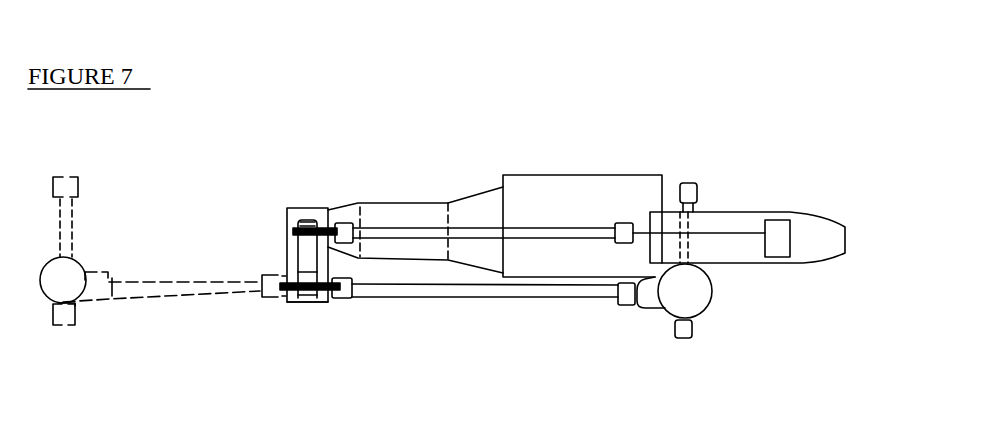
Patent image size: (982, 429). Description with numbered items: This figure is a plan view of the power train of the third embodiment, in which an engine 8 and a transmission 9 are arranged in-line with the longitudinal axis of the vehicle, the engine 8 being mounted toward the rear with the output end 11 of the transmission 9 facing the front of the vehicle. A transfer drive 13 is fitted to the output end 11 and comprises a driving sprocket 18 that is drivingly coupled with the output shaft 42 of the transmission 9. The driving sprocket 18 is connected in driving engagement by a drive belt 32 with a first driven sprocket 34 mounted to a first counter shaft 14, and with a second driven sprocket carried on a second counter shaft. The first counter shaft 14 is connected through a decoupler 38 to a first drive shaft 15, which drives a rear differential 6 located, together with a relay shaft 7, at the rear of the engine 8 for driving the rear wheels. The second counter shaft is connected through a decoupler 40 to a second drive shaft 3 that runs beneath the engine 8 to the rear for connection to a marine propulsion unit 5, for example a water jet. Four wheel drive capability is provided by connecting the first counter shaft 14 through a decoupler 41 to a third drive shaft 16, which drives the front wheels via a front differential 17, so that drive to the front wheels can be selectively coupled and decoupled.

The second drive shaft 3 is at (520, 275).
The marine propulsion unit 5 is at (748, 220).
The rear differential 6 is at (683, 293).
The relay shaft 7 is at (695, 212).
The engine 8 is at (592, 212).
The transmission 9 is at (418, 215).
The output end 11 is at (340, 217).
The transfer drive 13 is at (317, 221).
The first counter shaft 14 is at (320, 303).
The first drive shaft 15 is at (539, 298).
The third drive shaft 16 is at (157, 287).
The front differential 17 is at (62, 280).
The driving sprocket 18 is at (302, 222).
The drive belt 32 is at (300, 252).
The first driven sprocket 34 is at (305, 303).
The decoupler 38 is at (340, 299).
The decoupler 40 is at (345, 222).
The decoupler 41 is at (268, 298).
The output shaft 42 is at (293, 230).